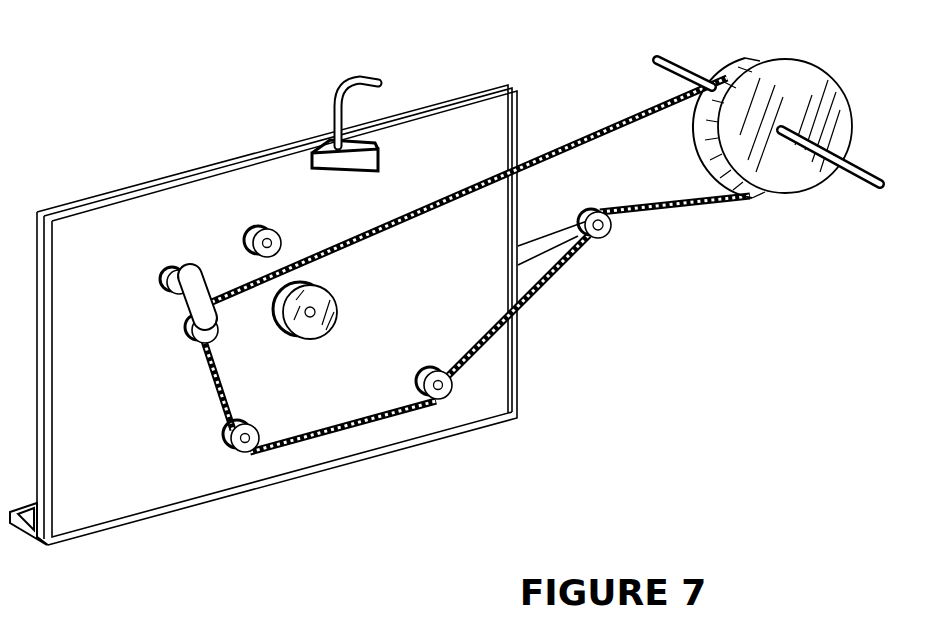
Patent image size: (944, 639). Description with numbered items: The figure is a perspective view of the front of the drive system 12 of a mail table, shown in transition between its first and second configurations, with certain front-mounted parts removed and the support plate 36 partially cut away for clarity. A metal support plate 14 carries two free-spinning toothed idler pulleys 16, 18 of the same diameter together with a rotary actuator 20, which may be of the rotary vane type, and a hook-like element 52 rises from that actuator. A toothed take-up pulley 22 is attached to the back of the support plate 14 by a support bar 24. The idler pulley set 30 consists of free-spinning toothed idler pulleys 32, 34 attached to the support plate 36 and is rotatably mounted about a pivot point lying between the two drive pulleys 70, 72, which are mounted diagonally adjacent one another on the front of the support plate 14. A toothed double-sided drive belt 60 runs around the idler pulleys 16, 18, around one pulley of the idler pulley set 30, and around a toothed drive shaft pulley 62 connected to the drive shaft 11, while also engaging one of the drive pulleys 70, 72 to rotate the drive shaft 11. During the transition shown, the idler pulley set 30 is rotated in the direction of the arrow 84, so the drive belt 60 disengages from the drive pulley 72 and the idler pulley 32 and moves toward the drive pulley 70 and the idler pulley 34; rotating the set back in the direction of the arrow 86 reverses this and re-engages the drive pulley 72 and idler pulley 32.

The drive shaft 11 is at (866, 170).
The drive system 12 is at (223, 122).
The support plate 14 is at (77, 227).
The idler pulley 16 is at (238, 448).
The idler pulley 18 is at (432, 394).
The rotary actuator 20 is at (362, 164).
The take-up pulley 22 is at (605, 238).
The support bar 24 is at (532, 242).
The idler pulley set 30 is at (179, 319).
The idler pulley 32 is at (166, 281).
The idler pulley 34 is at (218, 327).
The support plate 36 is at (200, 306).
The hook 52 is at (365, 78).
The double-sided drive belt 60 is at (562, 137).
The drive shaft pulley 62 is at (828, 108).
The drive pulley 70 is at (285, 238).
The drive pulley 72 is at (316, 325).
The arrow 84 is at (193, 214).
The arrow 86 is at (263, 354).